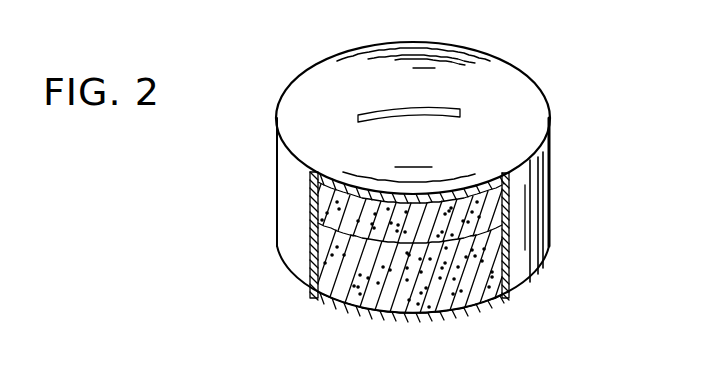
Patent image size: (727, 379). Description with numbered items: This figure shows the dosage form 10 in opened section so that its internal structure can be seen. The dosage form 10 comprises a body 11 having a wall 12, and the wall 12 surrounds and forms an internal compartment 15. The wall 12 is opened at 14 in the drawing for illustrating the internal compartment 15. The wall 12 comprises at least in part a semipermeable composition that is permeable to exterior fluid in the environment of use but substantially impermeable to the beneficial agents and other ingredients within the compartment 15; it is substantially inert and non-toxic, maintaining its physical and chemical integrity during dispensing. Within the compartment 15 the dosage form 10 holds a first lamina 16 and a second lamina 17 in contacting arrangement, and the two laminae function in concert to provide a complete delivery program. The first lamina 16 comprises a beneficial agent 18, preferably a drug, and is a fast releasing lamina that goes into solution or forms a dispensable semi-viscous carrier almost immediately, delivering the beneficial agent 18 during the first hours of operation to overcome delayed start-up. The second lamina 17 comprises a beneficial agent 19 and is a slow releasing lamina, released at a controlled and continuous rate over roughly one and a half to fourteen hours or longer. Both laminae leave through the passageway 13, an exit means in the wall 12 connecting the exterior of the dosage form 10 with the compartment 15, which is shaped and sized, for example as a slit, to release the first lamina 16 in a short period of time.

The dosage form 10 is at (566, 73).
The body 11 is at (550, 163).
The wall 12 is at (509, 190).
The passageway 13 is at (443, 110).
The opening in wall 14 is at (509, 230).
The internal compartment 15 is at (509, 265).
The first lamina 16 is at (311, 190).
The second lamina 17 is at (311, 240).
The beneficial agent 18 is at (346, 205).
The beneficial agent 19 is at (329, 274).